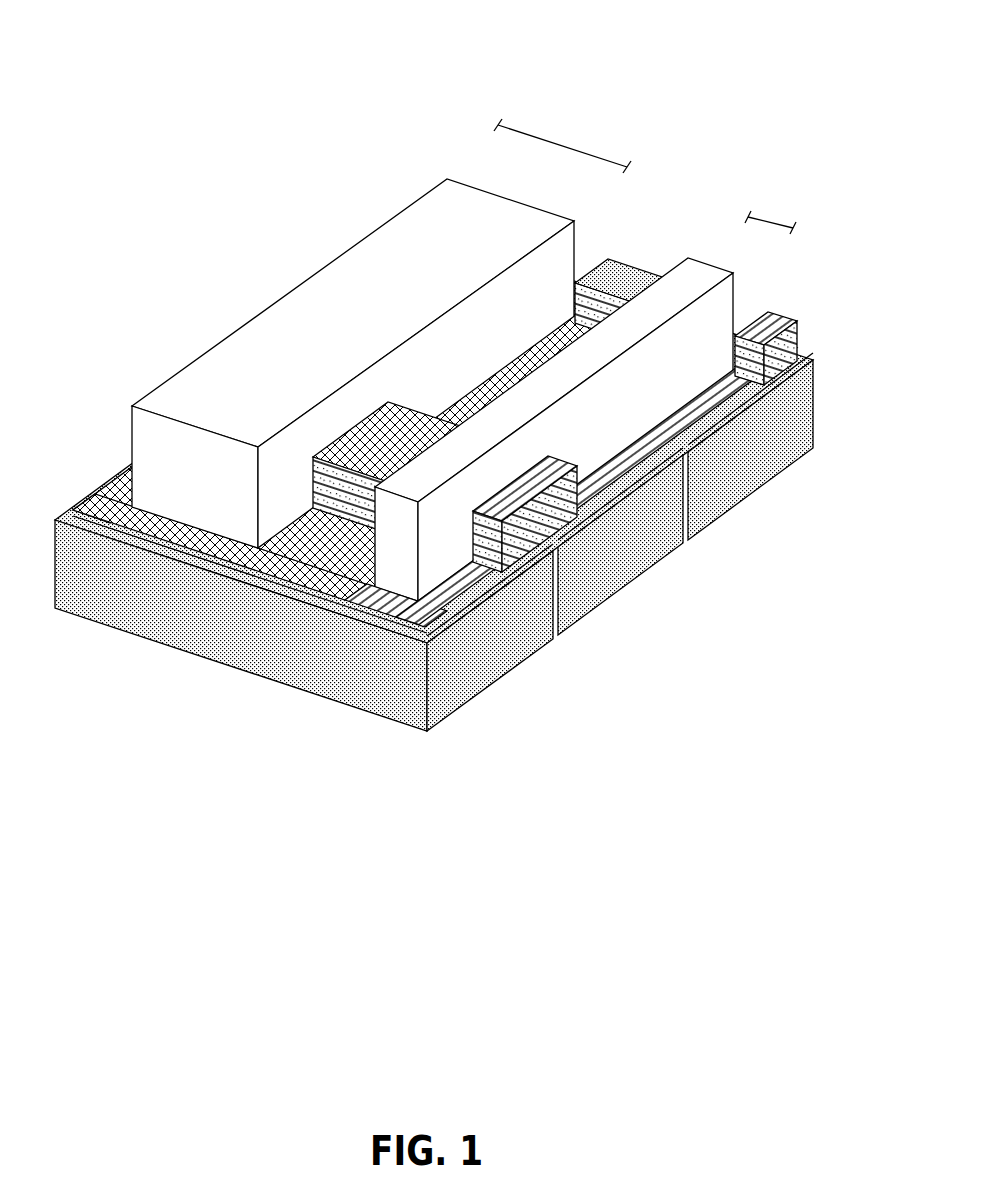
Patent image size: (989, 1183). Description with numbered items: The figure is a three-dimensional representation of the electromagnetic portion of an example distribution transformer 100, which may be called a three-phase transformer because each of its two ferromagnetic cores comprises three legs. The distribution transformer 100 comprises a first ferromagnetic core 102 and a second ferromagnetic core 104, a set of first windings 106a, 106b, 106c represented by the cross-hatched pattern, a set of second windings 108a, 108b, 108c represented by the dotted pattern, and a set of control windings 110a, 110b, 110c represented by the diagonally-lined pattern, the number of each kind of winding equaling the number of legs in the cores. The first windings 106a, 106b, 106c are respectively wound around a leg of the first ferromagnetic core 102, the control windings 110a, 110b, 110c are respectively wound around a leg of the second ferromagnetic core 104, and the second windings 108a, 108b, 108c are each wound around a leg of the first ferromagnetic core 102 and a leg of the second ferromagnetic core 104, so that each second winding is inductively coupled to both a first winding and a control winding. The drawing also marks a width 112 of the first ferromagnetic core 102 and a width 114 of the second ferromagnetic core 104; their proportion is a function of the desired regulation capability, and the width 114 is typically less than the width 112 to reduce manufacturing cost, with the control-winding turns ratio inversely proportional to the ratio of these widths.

The distribution transformer 100 is at (447, 376).
The first ferromagnetic core 102 is at (508, 200).
The second ferromagnetic core 104 is at (710, 260).
The first winding 106a is at (118, 508).
The first winding 106b is at (420, 425).
The first winding 106c is at (558, 333).
The second winding 108a is at (493, 660).
The second winding 108b is at (618, 567).
The second winding 108c is at (752, 470).
The control winding 110a is at (503, 607).
The control winding 110b is at (613, 530).
The control winding 110c is at (723, 415).
The width of the first ferromagnetic core 112 is at (570, 147).
The width of the second ferromagnetic core 114 is at (768, 222).